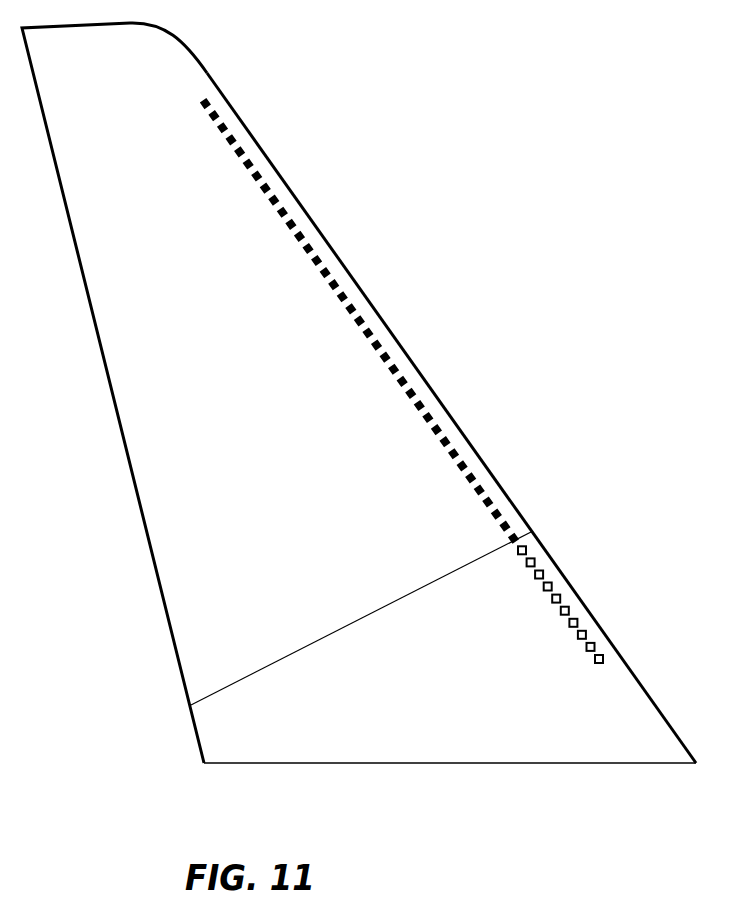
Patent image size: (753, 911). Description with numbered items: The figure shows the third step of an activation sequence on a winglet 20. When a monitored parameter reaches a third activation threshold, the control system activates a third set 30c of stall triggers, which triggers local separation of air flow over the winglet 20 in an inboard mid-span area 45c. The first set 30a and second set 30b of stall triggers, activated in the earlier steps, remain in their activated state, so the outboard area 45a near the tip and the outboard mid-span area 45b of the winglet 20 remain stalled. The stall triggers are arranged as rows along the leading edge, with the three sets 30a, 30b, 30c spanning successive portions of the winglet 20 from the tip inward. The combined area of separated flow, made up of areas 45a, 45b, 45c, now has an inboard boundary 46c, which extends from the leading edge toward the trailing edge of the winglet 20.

The winglet 20 is at (546, 318).
The first set of stall triggers 30a is at (237, 74).
The second set of stall triggers 30b is at (304, 168).
The third set of stall triggers 30c is at (429, 345).
The outboard area 45a is at (175, 199).
The outboard mid-span area 45b is at (245, 356).
The inboard mid-span area 45c is at (330, 536).
The inboard boundary 46c is at (412, 597).